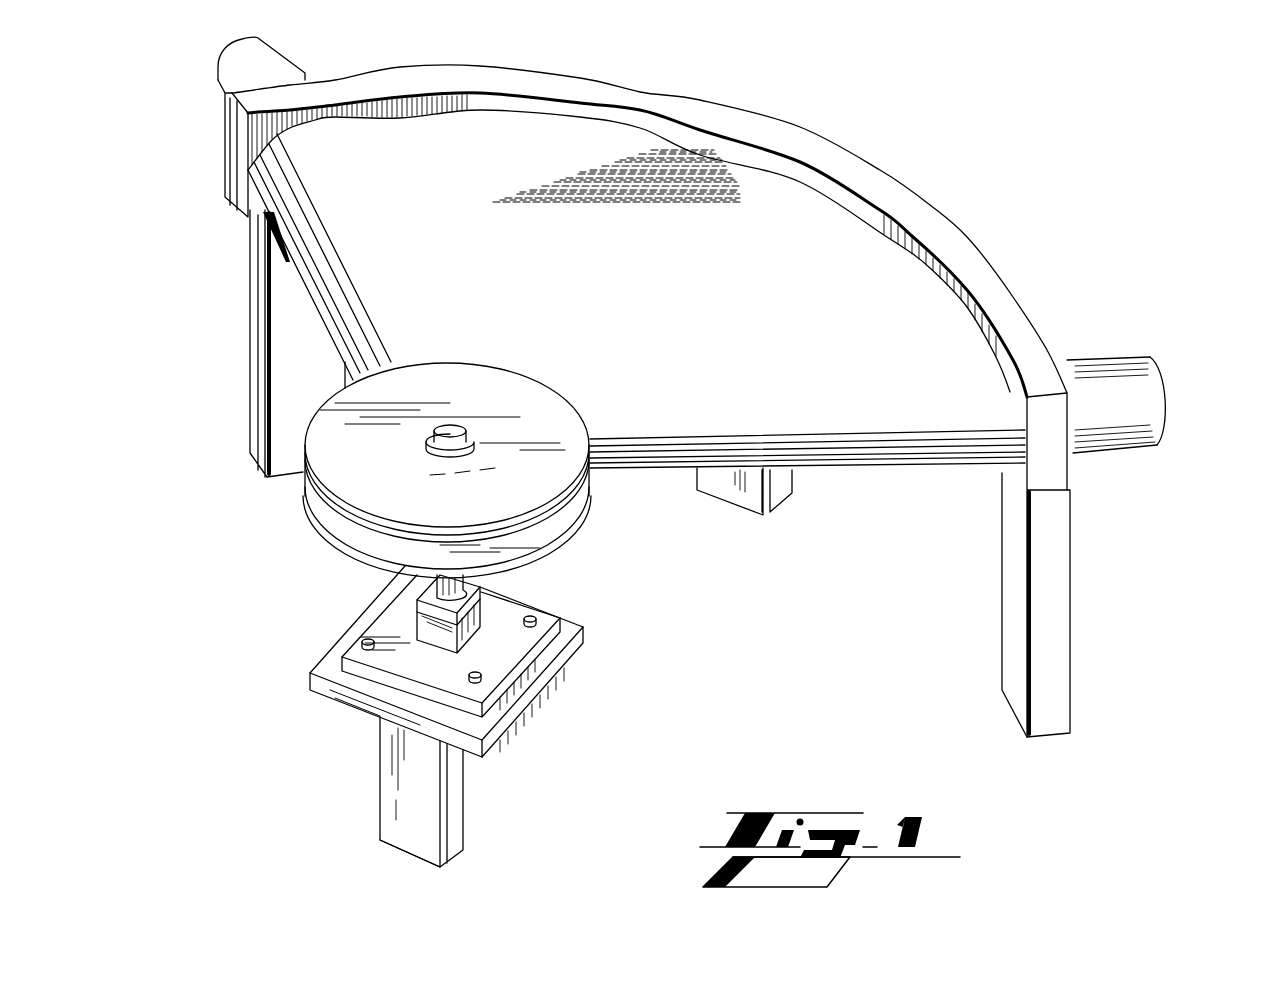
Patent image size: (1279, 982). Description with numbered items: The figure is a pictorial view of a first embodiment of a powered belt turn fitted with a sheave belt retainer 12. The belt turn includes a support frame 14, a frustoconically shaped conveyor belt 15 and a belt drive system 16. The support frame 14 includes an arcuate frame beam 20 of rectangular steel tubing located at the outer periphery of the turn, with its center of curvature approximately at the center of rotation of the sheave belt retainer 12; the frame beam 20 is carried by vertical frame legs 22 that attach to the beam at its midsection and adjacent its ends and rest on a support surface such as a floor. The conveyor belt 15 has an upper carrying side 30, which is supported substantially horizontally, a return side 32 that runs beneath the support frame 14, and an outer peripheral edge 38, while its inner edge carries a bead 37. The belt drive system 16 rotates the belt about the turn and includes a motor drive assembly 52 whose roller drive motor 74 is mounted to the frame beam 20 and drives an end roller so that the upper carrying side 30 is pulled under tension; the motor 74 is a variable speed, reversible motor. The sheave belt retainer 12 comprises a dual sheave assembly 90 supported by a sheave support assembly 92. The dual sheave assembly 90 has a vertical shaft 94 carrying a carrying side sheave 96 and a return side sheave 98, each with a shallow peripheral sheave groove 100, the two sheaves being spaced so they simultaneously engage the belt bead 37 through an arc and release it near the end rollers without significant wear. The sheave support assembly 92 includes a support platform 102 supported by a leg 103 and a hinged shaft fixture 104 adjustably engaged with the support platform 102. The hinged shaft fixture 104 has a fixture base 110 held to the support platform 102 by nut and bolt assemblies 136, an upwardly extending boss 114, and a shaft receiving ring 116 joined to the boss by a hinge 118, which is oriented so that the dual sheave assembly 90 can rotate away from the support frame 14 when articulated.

The sheave belt retainer 12 is at (305, 702).
The support frame 14 is at (877, 175).
The conveyor belt 15 is at (477, 140).
The belt drive system 16 is at (1105, 294).
The frame beam 20 is at (967, 235).
The frame legs 22 is at (1070, 590).
The upper carrying side 30 is at (797, 375).
The return side 32 is at (897, 445).
The bead 37 is at (532, 377).
The outer peripheral edge 38 is at (641, 127).
The motor drive assembly 52 is at (1163, 399).
The roller drive motor 74 is at (1105, 362).
The dual sheave assembly 90 is at (573, 546).
The sheave support assembly 92 is at (304, 666).
The vertical shaft 94 is at (490, 583).
The carrying side sheave 96 is at (593, 535).
The return side sheave 98 is at (325, 540).
The sheave groove 100 is at (322, 490).
The support platform 102 is at (565, 665).
The leg 103 is at (470, 797).
The hinged shaft fixture 104 is at (371, 598).
The fixture base 110 is at (370, 673).
The upwardly extending boss 114 is at (530, 650).
The shaft receiving ring 116 is at (548, 655).
The hinge 118 is at (415, 622).
The nut and bolt assemblies 136 is at (533, 613).